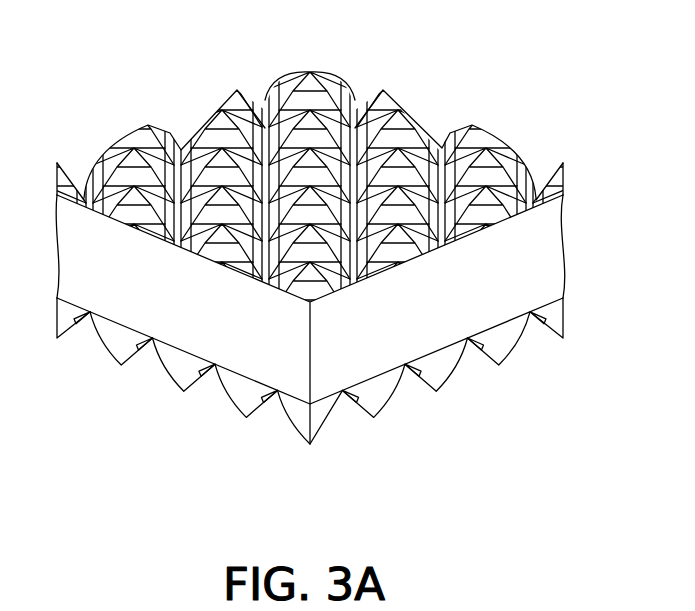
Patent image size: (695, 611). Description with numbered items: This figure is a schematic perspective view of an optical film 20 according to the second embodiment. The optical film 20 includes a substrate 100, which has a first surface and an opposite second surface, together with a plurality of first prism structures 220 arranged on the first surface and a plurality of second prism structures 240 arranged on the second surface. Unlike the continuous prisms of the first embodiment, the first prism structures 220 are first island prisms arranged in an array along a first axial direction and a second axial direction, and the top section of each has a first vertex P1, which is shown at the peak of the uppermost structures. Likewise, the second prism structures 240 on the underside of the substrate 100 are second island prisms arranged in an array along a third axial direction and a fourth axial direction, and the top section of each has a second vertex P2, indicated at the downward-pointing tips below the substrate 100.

The optical film 20 is at (52, 73).
The substrate 100 is at (555, 256).
The first prism structures 220 is at (309, 166).
The second prism structures 240 is at (310, 406).
The first vertex P1 is at (316, 100).
The second vertex P2 is at (390, 388).